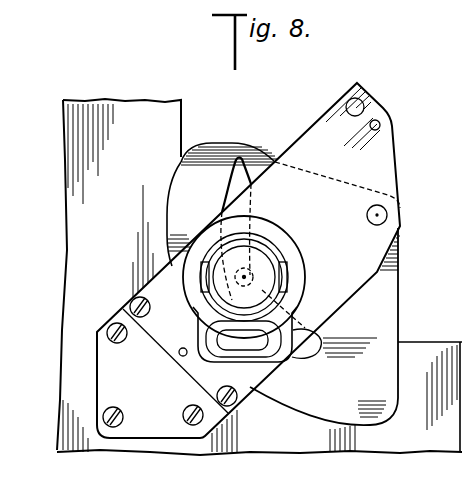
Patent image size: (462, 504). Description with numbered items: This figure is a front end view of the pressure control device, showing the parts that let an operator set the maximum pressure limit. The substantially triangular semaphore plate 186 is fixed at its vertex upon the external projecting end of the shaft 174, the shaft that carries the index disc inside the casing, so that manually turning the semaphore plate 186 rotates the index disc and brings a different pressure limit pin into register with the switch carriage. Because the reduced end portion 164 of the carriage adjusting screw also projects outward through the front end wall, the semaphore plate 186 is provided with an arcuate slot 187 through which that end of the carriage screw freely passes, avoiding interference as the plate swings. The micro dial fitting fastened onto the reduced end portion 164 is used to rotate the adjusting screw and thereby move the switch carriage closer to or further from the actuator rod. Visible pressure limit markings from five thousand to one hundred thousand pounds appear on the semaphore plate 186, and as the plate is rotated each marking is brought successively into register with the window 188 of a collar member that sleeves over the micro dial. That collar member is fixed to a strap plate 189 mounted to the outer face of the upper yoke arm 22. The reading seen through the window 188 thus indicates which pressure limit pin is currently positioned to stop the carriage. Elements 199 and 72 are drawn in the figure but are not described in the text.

The upper yoke arm 22 is at (113, 115).
The semaphore plate 186 is at (200, 144).
The arcuate slot 187 is at (232, 170).
The shaft 174 is at (385, 209).
The reduced end portion 164 is at (253, 268).
The bearing ring 199 is at (305, 280).
The indicator housing 72 is at (203, 270).
The strap plate 189 is at (112, 323).
The window 188 is at (217, 348).